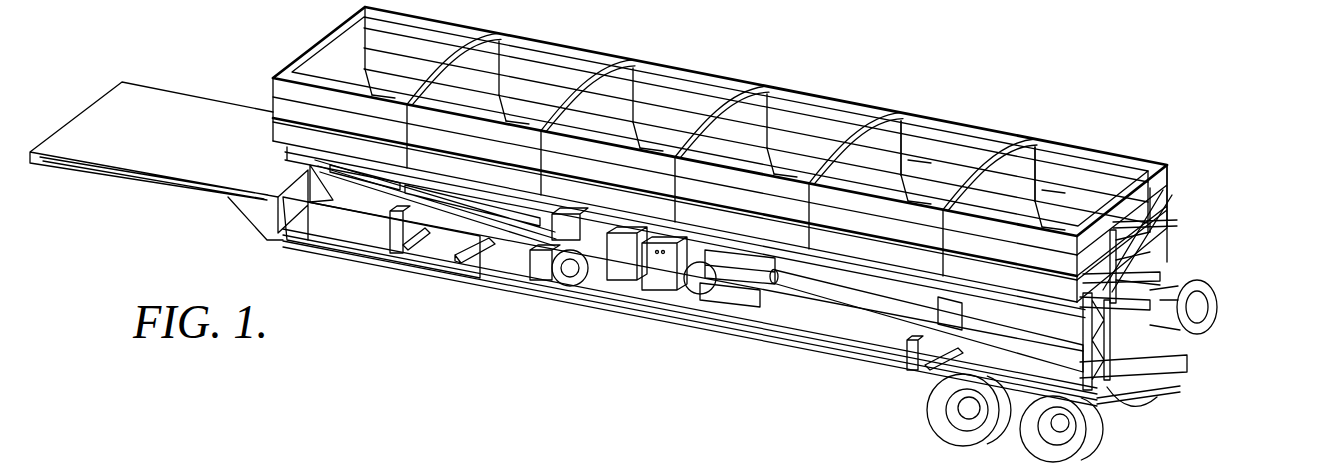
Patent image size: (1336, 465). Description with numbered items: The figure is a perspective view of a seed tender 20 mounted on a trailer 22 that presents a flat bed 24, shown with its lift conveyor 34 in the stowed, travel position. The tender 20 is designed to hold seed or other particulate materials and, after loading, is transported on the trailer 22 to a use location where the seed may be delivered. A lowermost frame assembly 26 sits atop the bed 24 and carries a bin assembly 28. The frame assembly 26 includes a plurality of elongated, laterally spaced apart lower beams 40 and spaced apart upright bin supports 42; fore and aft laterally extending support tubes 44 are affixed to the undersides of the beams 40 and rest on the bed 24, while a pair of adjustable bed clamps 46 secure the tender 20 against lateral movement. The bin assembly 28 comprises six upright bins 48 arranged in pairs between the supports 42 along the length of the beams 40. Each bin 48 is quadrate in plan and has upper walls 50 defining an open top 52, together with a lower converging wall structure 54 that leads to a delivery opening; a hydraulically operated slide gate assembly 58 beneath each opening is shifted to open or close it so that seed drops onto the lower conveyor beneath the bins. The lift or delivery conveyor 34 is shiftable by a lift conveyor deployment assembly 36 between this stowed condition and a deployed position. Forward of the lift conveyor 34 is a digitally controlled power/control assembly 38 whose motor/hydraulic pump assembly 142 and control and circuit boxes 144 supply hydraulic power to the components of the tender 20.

The tender 20 is at (983, 90).
The trailer 22 is at (715, 337).
The flat bed 24 is at (852, 337).
The frame assembly 26 is at (318, 255).
The bin assembly 28 is at (705, 66).
The lift conveyor 34 is at (793, 303).
The lift conveyor deployment assembly 36 is at (1217, 282).
The power/control assembly 38 is at (538, 300).
The lower beams 40 is at (327, 210).
The upright bin supports 42 is at (566, 230).
The support tubes 44 is at (458, 262).
The adjustable bed clamps 46 is at (380, 258).
The upright bins 48 is at (843, 96).
The upper walls 50 is at (936, 128).
The open top 52 is at (1058, 142).
The lower converging wall structure 54 is at (393, 183).
The slide gate assembly 58 is at (437, 188).
The motor/hydraulic pump assembly 142 is at (580, 295).
The control and circuit boxes 144 is at (650, 305).